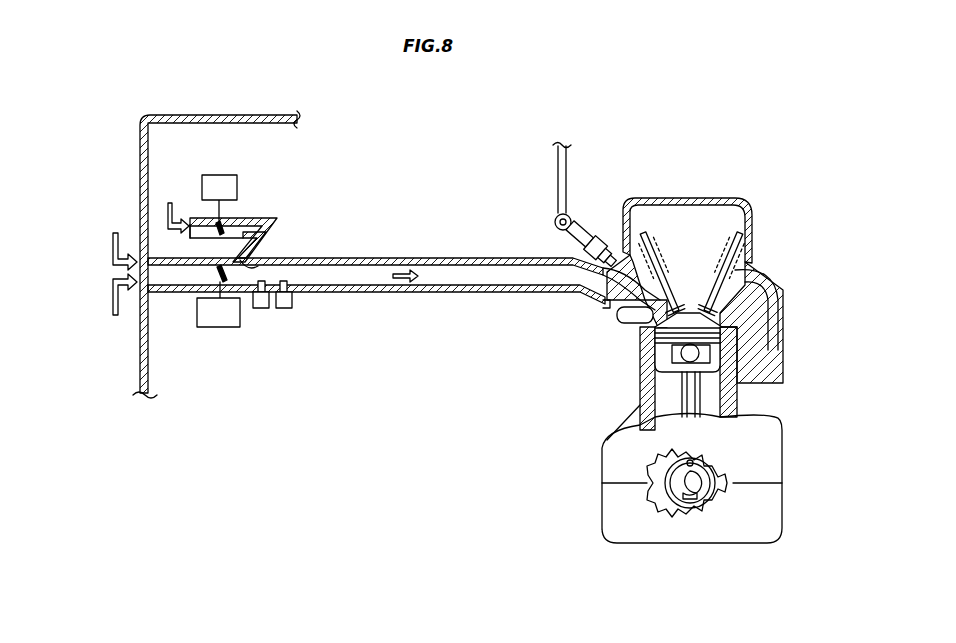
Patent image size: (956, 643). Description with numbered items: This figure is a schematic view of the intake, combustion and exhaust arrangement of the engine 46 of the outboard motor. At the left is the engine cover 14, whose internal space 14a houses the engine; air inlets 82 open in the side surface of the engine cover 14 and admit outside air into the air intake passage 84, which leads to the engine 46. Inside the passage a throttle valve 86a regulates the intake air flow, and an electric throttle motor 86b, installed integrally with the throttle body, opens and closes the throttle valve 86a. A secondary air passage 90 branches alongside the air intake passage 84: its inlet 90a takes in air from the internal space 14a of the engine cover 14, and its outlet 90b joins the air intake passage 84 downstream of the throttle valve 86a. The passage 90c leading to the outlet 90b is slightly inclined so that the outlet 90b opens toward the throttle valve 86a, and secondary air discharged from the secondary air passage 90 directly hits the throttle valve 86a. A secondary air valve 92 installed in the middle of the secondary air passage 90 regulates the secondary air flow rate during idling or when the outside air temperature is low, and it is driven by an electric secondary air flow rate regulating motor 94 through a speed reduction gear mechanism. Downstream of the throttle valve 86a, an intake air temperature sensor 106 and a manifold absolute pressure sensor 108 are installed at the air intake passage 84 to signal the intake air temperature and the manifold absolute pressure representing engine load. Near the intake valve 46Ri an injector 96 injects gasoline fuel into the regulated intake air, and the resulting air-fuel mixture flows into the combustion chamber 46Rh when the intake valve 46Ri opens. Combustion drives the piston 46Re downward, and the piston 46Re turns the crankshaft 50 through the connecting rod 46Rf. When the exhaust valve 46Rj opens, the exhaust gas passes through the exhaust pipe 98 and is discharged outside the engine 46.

The engine cover 14 is at (141, 207).
The internal space 14a is at (238, 156).
The air inlets 82 is at (137, 272).
The air intake passage 84 is at (308, 295).
The throttle valve 86a is at (215, 268).
The electric throttle motor 86b is at (236, 323).
The secondary air passage 90 is at (258, 217).
The inlet 90a is at (193, 229).
The outlet 90b is at (258, 268).
The passage 90c is at (272, 235).
The secondary air valve 92 is at (214, 229).
The electric secondary air flow rate regulating motor 94 is at (232, 198).
The injector 96 is at (577, 250).
The exhaust pipe 98 is at (752, 308).
The intake air temperature sensor 106 is at (260, 310).
The manifold absolute pressure sensor 108 is at (287, 312).
The engine 46 is at (741, 198).
The intake valve 46Ri is at (681, 310).
The exhaust valve 46Rj is at (757, 257).
The combustion chamber 46Rh is at (727, 341).
The piston 46Re is at (715, 362).
The connecting rod 46Rf is at (695, 398).
The crankshaft 50 is at (693, 482).